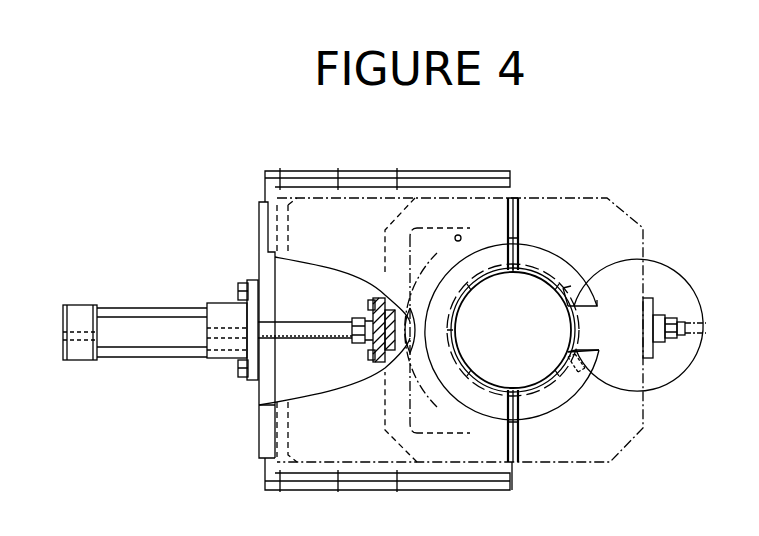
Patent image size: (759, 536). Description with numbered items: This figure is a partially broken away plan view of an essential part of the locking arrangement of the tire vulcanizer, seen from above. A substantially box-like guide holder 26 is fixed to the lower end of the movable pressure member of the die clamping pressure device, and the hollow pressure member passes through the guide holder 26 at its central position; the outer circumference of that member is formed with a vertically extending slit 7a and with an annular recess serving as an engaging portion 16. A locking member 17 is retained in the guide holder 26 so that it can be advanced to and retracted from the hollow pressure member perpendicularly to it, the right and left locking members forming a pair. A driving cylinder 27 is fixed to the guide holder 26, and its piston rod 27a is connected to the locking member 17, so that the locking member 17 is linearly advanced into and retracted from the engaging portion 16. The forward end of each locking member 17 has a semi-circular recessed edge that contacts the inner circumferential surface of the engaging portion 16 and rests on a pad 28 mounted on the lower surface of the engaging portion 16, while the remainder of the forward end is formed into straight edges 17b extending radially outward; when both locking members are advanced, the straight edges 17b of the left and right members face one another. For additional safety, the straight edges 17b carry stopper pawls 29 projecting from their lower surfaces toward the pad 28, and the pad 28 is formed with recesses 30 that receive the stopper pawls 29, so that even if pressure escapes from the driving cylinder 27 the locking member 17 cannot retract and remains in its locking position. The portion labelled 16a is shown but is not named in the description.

The guide holder 26 is at (412, 169).
The locking member 17 is at (412, 205).
The straight edge 17b is at (510, 198).
The engaging portion 16 is at (600, 290).
The ring notch 16a is at (566, 290).
The pad 28 is at (598, 300).
The slit 7a is at (587, 351).
The stopper pawl 29 is at (505, 232).
The recess 30 is at (506, 229).
The driving cylinder 27 is at (162, 305).
The piston rod 27a is at (321, 340).